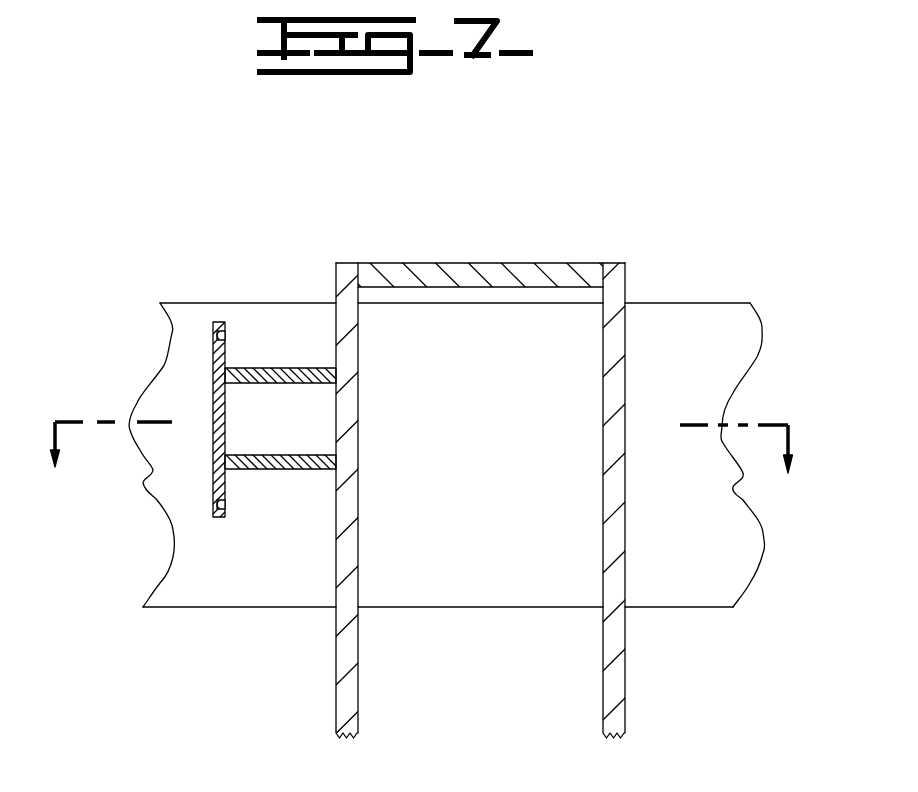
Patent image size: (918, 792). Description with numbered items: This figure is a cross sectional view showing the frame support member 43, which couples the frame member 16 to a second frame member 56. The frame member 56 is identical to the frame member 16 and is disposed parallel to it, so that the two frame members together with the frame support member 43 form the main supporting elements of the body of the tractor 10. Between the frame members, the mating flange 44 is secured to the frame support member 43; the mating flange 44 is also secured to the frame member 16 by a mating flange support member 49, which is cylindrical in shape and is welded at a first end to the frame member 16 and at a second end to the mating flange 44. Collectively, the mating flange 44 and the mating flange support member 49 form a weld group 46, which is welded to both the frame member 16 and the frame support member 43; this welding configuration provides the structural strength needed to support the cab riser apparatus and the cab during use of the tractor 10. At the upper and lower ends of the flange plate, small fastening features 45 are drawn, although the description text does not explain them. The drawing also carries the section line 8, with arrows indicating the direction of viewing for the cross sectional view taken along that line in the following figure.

The tractor 10 is at (216, 182).
The frame member 16 is at (358, 323).
The frame support member 43 is at (477, 338).
The mating flange 44 is at (213, 413).
The fasteners 45 is at (213, 332).
The weld group 46 is at (250, 343).
The mating flange support member 49 is at (285, 428).
The second frame member 56 is at (625, 335).
The section line 8— 8 is at (422, 463).